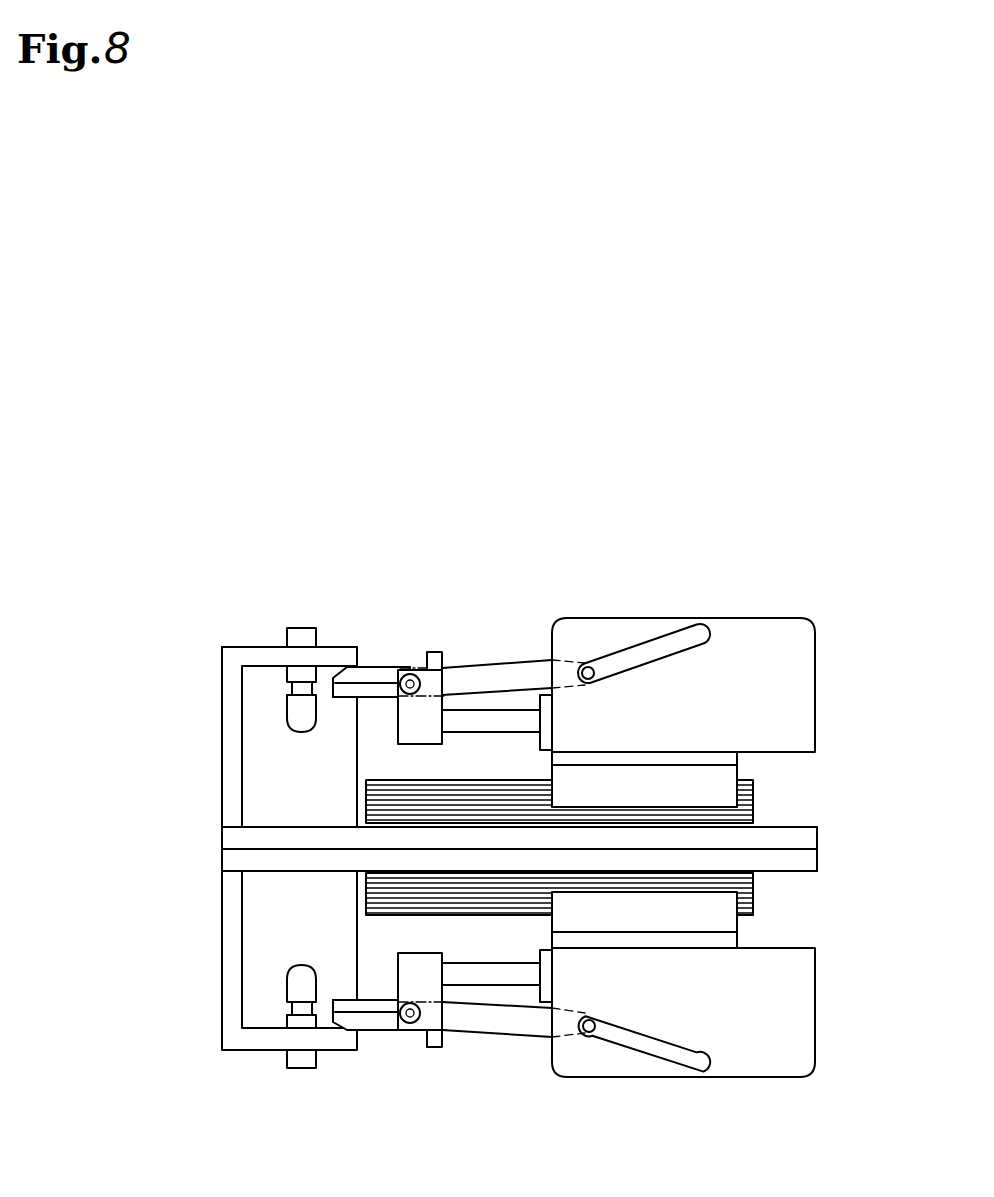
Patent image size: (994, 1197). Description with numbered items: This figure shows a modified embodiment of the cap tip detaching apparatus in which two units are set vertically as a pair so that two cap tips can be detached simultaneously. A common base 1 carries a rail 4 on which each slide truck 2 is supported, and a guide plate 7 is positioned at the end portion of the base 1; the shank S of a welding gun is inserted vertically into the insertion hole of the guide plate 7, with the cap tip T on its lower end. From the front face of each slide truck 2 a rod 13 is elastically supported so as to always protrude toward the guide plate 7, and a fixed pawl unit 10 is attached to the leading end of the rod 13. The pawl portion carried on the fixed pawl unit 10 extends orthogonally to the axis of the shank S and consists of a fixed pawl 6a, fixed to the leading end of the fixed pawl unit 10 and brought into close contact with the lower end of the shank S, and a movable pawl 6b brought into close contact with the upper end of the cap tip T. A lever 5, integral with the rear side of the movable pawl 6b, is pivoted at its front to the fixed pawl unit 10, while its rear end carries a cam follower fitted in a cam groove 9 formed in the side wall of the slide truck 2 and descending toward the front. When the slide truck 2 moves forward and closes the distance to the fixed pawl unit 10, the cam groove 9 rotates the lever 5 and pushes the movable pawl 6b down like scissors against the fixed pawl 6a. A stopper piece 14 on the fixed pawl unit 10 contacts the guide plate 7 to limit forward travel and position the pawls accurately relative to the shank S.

The base 1 is at (222, 838).
The slide truck 2 is at (812, 662).
The rail 4 is at (755, 799).
The lever 5 is at (478, 663).
The fixed pawl 6a is at (368, 665).
The movable pawl 6b is at (345, 698).
The guide plate 7 is at (262, 647).
The cam groove 9 is at (656, 640).
The fixed pawl unit 10 is at (420, 747).
The rod 13 is at (498, 710).
The stopper piece 14 is at (438, 650).
The shank S is at (297, 628).
The cap tip T is at (287, 715).